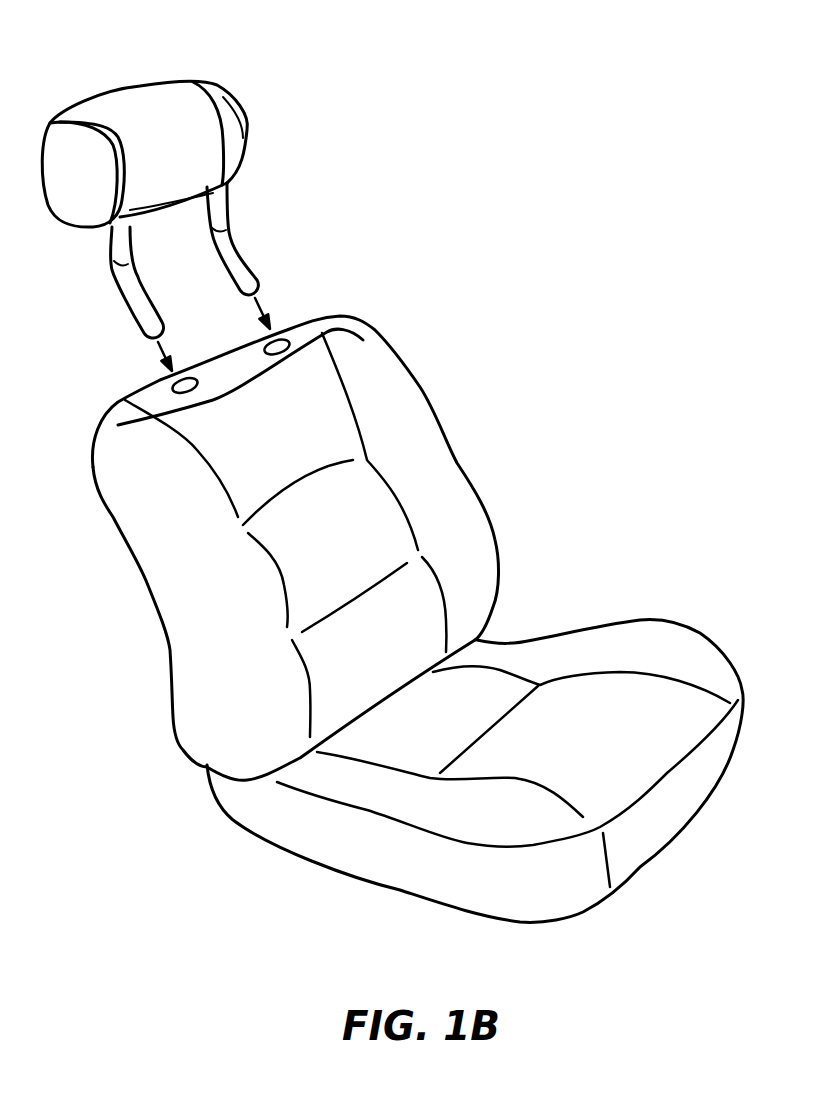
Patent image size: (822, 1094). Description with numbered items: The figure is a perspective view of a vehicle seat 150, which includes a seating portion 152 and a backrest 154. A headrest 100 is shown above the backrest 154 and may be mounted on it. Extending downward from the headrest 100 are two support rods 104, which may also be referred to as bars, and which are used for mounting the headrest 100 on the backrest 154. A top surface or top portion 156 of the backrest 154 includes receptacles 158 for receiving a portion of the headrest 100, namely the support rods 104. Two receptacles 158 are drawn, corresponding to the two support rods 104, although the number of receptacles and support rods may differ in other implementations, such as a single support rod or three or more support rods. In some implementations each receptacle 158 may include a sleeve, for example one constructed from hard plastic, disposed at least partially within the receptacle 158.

The headrest 100 is at (247, 125).
The support rod 104 is at (233, 233).
The vehicle seat 150 is at (482, 116).
The seating portion 152 is at (695, 718).
The backrest 154 is at (465, 502).
The top portion 156 is at (340, 317).
The receptacle 158 is at (177, 385).